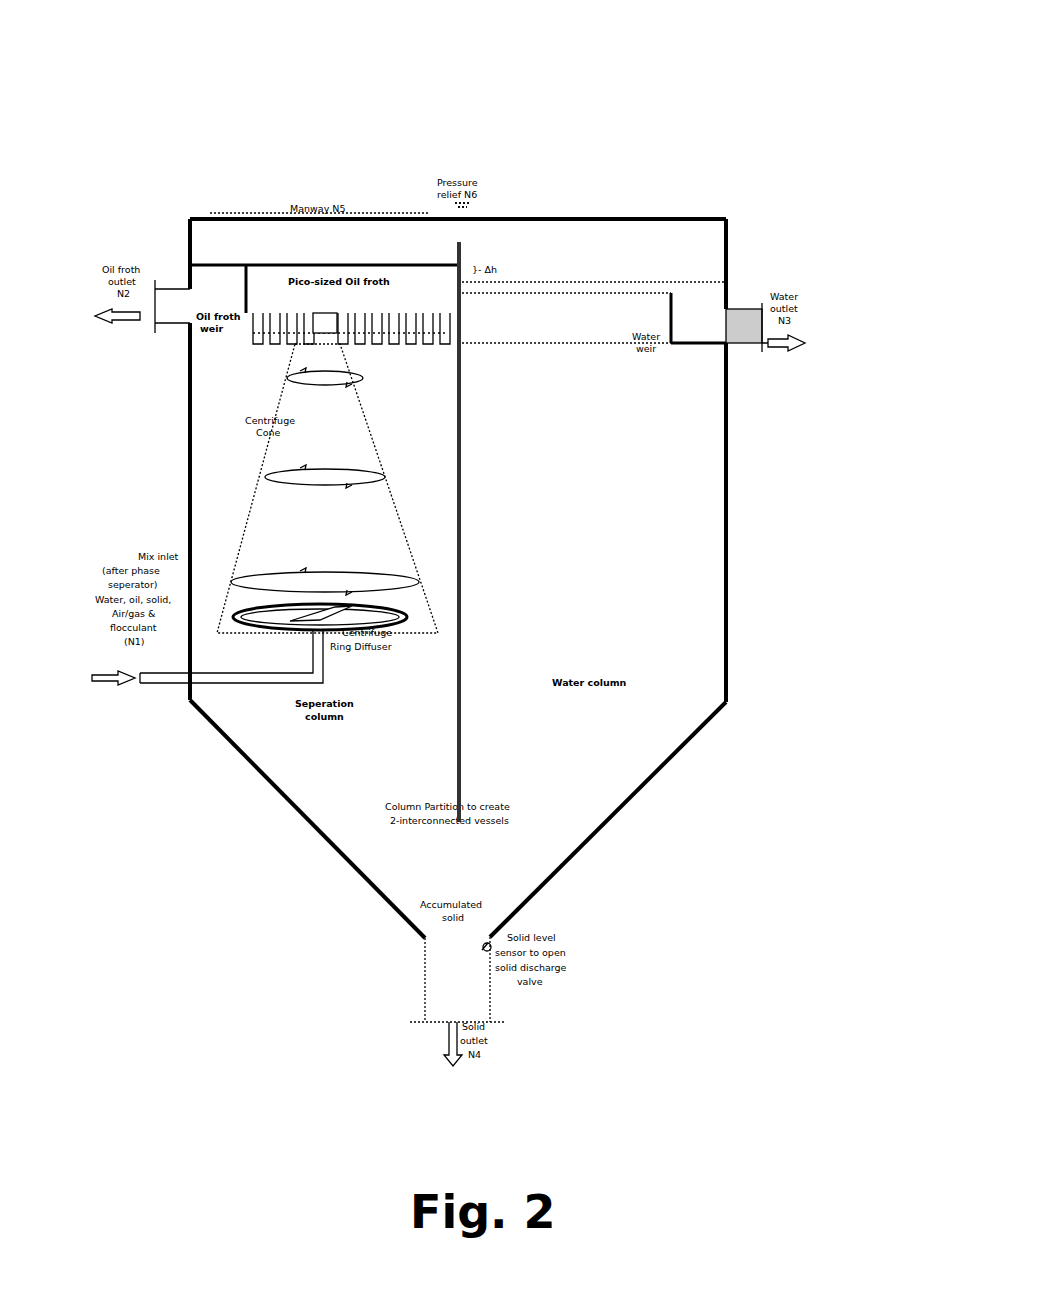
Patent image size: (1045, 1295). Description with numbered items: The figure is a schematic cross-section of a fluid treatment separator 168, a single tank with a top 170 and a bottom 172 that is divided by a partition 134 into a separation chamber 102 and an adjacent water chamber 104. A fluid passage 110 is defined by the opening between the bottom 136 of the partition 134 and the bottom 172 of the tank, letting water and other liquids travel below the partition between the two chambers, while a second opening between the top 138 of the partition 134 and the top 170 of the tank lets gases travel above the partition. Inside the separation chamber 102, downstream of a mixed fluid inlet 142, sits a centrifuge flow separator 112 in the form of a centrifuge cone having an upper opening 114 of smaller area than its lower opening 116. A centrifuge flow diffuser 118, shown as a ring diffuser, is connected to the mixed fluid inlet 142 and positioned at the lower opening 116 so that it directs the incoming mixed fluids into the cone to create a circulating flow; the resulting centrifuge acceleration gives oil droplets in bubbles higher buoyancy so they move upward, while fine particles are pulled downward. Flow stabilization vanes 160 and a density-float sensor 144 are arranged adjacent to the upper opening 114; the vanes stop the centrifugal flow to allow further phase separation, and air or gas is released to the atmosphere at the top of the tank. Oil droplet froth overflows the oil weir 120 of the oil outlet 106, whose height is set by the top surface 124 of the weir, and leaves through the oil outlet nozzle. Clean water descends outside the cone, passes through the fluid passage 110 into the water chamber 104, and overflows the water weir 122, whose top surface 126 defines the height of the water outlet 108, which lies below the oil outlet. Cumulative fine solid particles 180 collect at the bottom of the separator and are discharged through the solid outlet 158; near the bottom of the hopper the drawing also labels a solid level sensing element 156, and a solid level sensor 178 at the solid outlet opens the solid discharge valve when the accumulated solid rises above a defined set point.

The separation chamber 102 is at (190, 499).
The water chamber 104 is at (729, 445).
The oil outlet 106 is at (168, 288).
The water outlet 108 is at (760, 318).
The fluid passage 110 is at (455, 855).
The centrifuge flow separator 112 is at (253, 497).
The upper opening 114 is at (352, 313).
The lower opening 116 is at (395, 648).
The centrifuge flow diffuser 118 is at (273, 603).
The oil weir 120 is at (243, 304).
The water weir 122 is at (728, 322).
The top surface of the oil weir 124 is at (242, 303).
The top surface of the water weir 126 is at (672, 300).
The partition 134 is at (464, 553).
The bottom of the partition 136 is at (470, 830).
The top of the partition 138 is at (462, 243).
The mixed fluid inlet 142 is at (196, 675).
The density-float sensor 144 is at (318, 313).
The solid level sensor 156 is at (510, 920).
The solid outlet 158 is at (422, 992).
The flow stabilization vanes 160 is at (432, 307).
The fluid treatment separator 168 is at (729, 383).
The top of the tank 170 is at (604, 219).
The bottom of the tank 172 is at (660, 770).
The solid level sensor 178 is at (490, 948).
The cumulative fine solid particles 180 is at (425, 936).